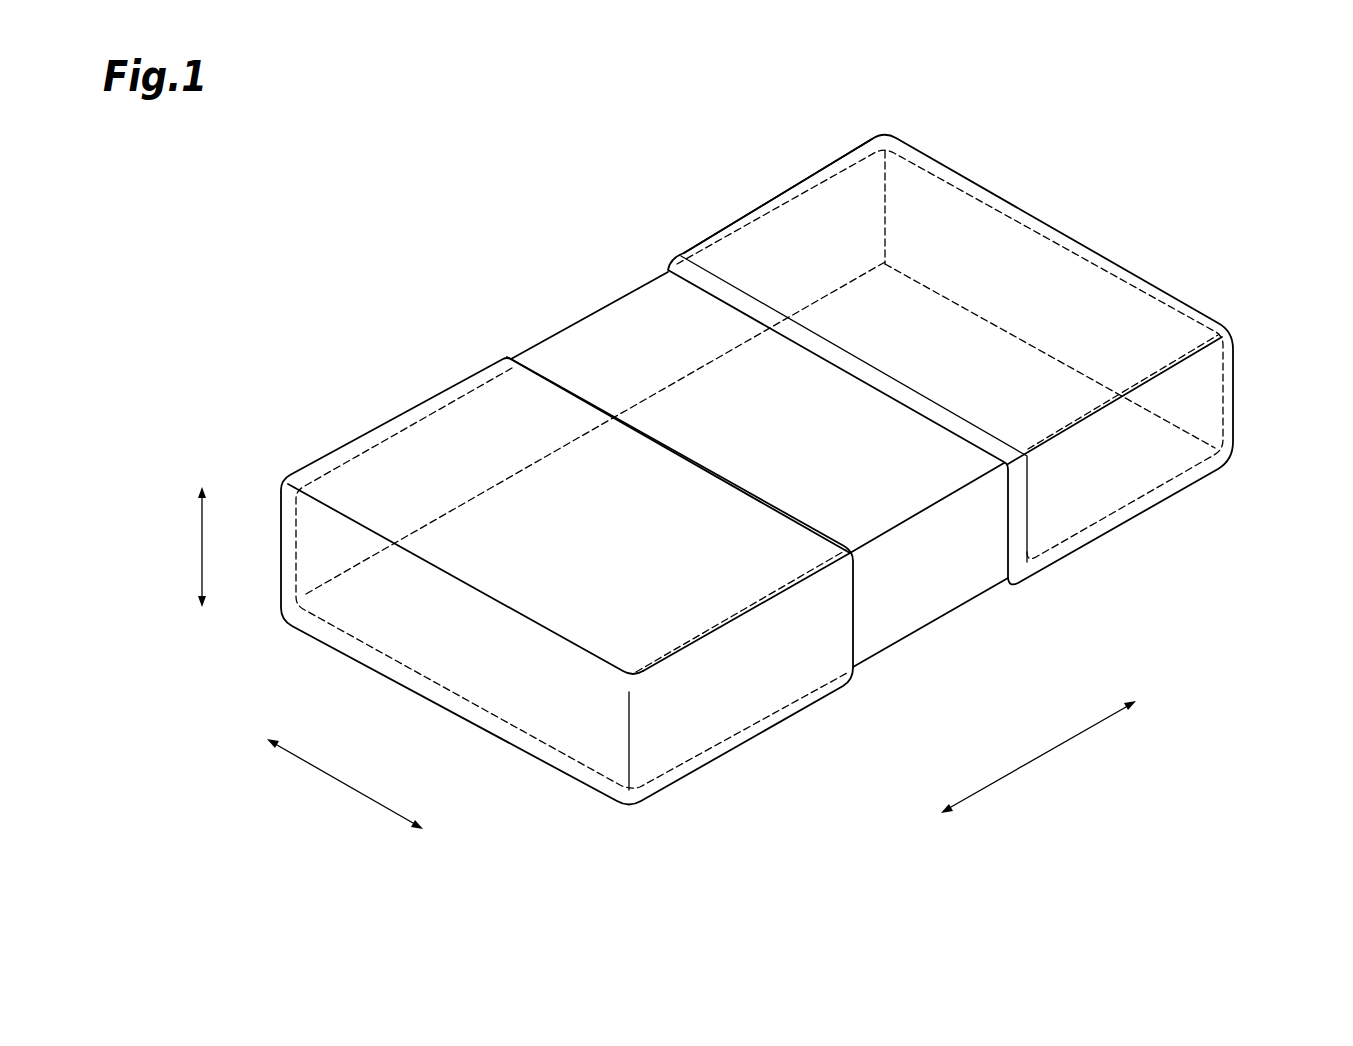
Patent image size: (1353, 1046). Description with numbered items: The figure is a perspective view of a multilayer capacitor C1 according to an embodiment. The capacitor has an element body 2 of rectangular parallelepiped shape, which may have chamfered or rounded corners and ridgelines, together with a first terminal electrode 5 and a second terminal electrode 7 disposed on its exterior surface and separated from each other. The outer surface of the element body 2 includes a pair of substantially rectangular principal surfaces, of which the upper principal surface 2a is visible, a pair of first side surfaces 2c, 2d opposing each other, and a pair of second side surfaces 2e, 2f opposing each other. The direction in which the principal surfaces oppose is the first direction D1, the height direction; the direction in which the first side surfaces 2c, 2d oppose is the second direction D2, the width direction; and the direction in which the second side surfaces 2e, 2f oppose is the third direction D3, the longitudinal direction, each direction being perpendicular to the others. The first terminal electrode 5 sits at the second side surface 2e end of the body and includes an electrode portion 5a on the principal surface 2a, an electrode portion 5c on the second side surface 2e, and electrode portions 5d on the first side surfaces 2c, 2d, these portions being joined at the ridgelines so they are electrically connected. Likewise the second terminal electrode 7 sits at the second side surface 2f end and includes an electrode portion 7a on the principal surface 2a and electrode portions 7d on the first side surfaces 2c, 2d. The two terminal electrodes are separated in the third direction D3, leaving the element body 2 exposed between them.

The multilayer capacitor C1 is at (1108, 196).
The element body 2 is at (622, 288).
The principal surface 2a is at (833, 393).
The first side surface 2c is at (925, 603).
The first side surface 2d is at (603, 357).
The second side surface 2e is at (548, 717).
The second side surface 2f is at (1190, 380).
The first terminal electrode 5 is at (371, 430).
The electrode portion 5a is at (710, 490).
The electrode portion 5c is at (403, 633).
The electrode portion 5d is at (728, 715).
The second terminal electrode 7 is at (760, 196).
The electrode portion 7a is at (977, 217).
The electrode portion 7d is at (1093, 507).
The first direction D1 is at (198, 548).
The second direction D2 is at (333, 778).
The third direction D3 is at (1040, 757).